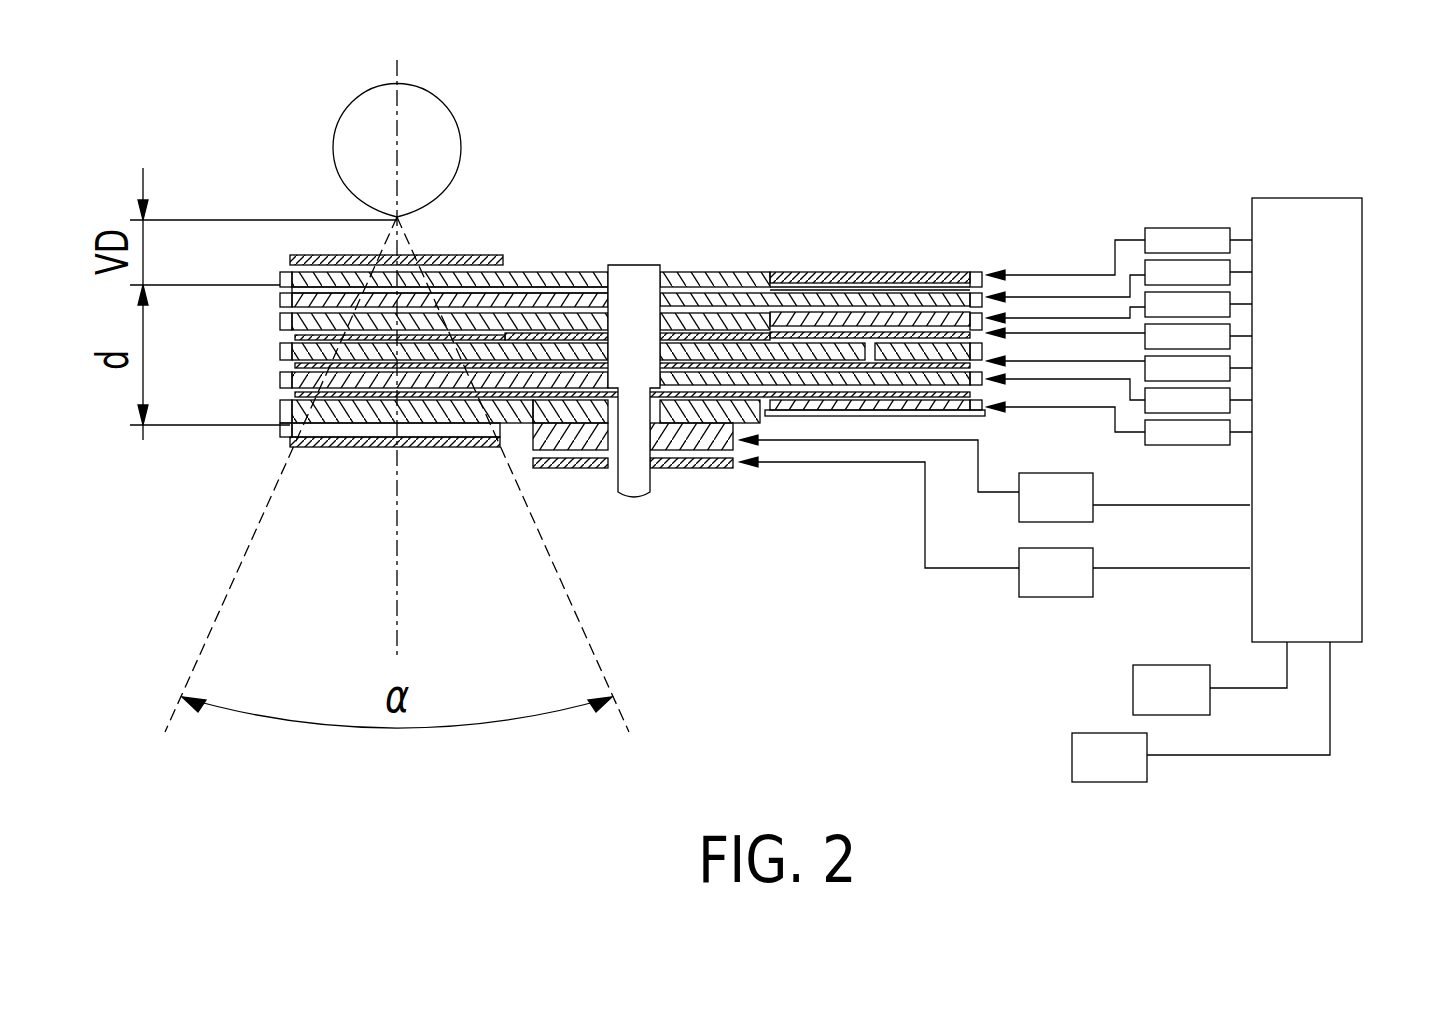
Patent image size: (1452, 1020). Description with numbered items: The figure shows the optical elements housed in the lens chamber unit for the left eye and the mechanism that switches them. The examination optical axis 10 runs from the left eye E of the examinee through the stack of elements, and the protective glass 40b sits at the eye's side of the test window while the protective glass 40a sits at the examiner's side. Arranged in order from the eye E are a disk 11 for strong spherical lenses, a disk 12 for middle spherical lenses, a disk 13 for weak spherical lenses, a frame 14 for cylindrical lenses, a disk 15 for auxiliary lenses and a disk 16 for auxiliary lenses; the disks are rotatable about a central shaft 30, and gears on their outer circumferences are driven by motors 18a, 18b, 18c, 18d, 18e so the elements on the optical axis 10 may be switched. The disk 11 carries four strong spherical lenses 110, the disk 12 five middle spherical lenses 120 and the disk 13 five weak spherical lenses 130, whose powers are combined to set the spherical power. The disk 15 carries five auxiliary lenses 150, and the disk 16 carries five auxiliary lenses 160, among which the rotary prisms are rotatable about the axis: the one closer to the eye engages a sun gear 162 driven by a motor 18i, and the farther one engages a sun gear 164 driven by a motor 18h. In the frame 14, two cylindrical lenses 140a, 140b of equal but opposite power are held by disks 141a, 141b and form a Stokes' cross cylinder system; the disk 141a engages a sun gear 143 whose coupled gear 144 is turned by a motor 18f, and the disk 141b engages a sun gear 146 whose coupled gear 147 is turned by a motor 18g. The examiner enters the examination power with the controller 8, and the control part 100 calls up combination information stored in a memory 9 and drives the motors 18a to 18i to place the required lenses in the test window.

The left eye of the examinee E is at (440, 93).
The examination optical axis 10 is at (395, 625).
The disk for strong spherical lenses 11 is at (576, 227).
The disk for middle spherical lenses 12 is at (577, 220).
The disk for weak spherical lenses 13 is at (577, 216).
The frame for cylindrical lenses 14 is at (705, 350).
The disk for auxiliary lenses 15 is at (285, 400).
The disk for auxiliary lenses 16 is at (577, 480).
The shaft 30 is at (630, 287).
The protective glass 40a is at (312, 447).
The protective glass 40b is at (440, 258).
The spherical lenses 110 is at (330, 280).
The spherical lenses 120 is at (336, 300).
The spherical lenses 130 is at (345, 322).
The cylindrical lens 140a is at (455, 295).
The cylindrical lens 140b is at (472, 470).
The disk 141a is at (282, 343).
The disk 141b is at (282, 372).
The sun gear 143 is at (558, 337).
The gear 144 is at (827, 335).
The sun gear 146 is at (585, 425).
The gear 147 is at (818, 422).
The auxiliary lenses 150 is at (368, 450).
The auxiliary lenses 160 is at (430, 402).
The sun gear 162 is at (715, 425).
The sun gear 164 is at (553, 452).
The motor 18a is at (1198, 228).
The motor 18b is at (1145, 268).
The motor 18c is at (1232, 293).
The motor 18d is at (1232, 403).
The motor 18e is at (1232, 437).
The motor 18f is at (1232, 345).
The motor 18g is at (1232, 373).
The motor 18h is at (1095, 487).
The motor 18i is at (1062, 597).
The control part 100 is at (1308, 198).
The memory 9 is at (1170, 665).
The controller 8 is at (1072, 768).